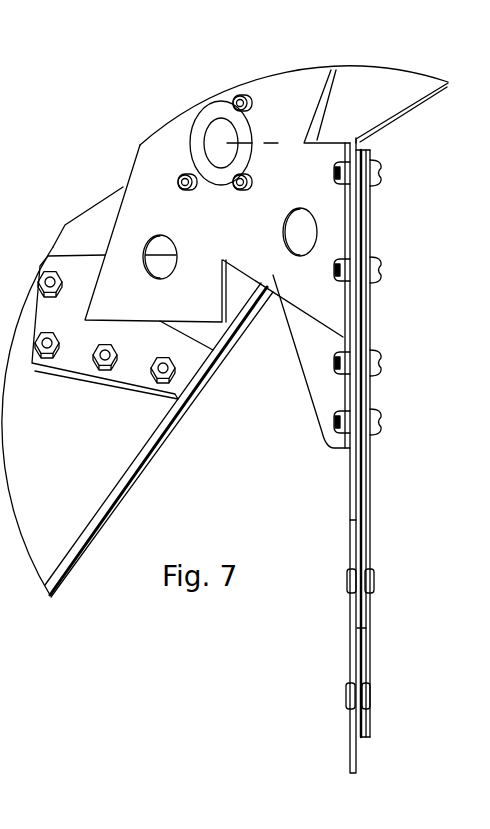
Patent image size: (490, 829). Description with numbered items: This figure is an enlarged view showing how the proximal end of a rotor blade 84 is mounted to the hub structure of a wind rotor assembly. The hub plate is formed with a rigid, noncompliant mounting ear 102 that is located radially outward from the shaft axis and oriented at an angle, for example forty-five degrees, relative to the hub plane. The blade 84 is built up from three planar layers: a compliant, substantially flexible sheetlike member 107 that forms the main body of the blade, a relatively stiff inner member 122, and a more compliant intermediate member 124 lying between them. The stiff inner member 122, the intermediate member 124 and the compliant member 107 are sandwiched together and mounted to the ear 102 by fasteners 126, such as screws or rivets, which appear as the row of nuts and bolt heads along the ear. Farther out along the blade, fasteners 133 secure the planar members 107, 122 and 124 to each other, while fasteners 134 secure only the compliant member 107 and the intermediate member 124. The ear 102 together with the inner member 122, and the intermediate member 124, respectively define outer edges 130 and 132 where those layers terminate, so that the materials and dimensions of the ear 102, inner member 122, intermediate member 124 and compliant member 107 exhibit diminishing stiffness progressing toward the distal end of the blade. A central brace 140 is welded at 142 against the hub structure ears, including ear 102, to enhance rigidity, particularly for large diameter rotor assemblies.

The rotor blade 84 is at (348, 507).
The mounting ear 102 is at (347, 392).
The compliant planar member 107 is at (353, 742).
The stiff inner member 122 is at (371, 557).
The intermediate member 124 is at (366, 668).
The fasteners 126 is at (378, 428).
The outer edge 130 is at (365, 631).
The outer edge 132 is at (363, 734).
The fasteners 133 is at (348, 583).
The fasteners 134 is at (348, 693).
The central brace 140 is at (279, 288).
The weld 142 is at (220, 341).